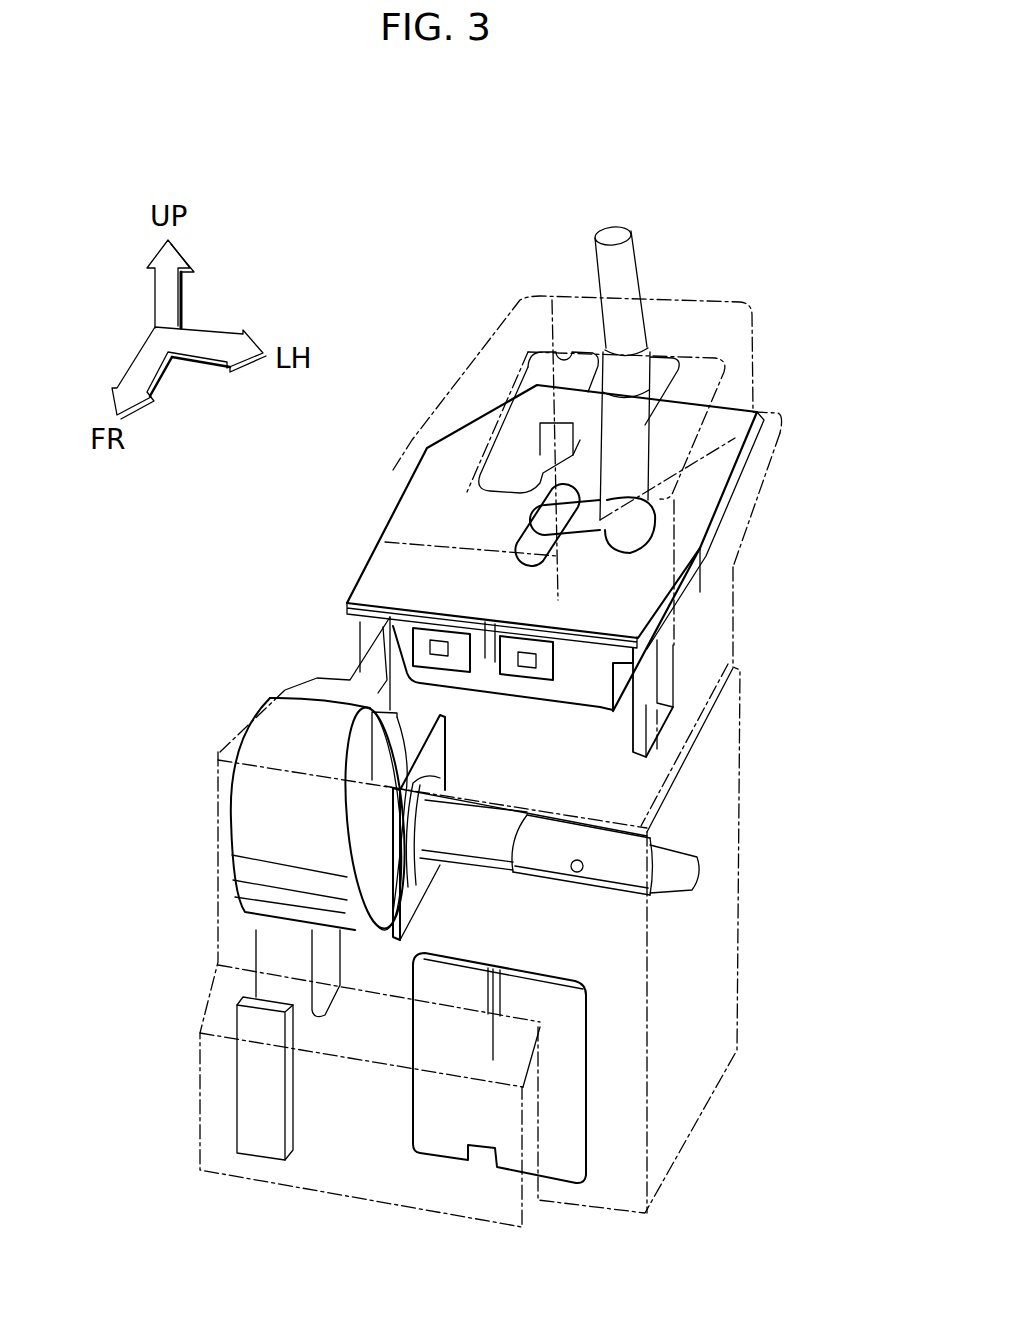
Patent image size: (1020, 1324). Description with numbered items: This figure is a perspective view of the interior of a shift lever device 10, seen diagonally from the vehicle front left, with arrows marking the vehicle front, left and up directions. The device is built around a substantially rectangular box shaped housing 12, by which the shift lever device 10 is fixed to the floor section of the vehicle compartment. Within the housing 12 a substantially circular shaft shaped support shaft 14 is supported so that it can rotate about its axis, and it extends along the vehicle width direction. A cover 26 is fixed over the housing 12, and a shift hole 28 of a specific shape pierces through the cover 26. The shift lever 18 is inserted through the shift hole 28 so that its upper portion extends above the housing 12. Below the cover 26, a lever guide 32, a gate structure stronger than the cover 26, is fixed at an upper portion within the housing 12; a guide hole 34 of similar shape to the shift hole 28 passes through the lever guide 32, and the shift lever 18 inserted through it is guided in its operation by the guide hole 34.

The shift lever device 10 is at (239, 600).
The housing 12 is at (222, 790).
The support shaft 14 is at (545, 880).
The shift lever 18 is at (637, 252).
The cover 26 is at (500, 320).
The shift hole 28 is at (552, 300).
The lever guide 32 is at (573, 688).
The guide hole 34 is at (655, 500).